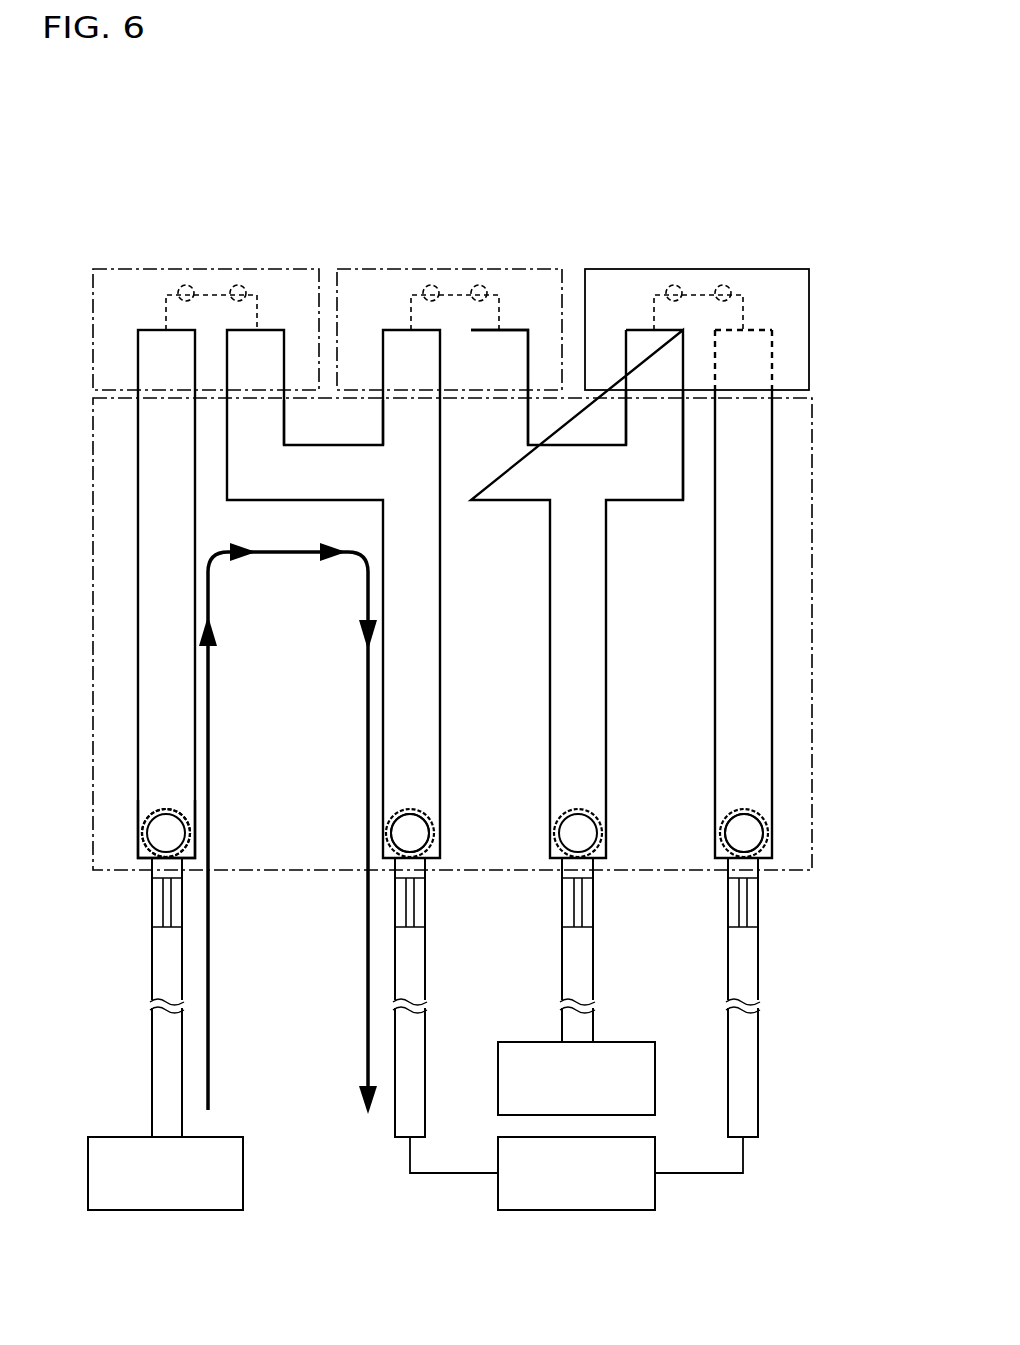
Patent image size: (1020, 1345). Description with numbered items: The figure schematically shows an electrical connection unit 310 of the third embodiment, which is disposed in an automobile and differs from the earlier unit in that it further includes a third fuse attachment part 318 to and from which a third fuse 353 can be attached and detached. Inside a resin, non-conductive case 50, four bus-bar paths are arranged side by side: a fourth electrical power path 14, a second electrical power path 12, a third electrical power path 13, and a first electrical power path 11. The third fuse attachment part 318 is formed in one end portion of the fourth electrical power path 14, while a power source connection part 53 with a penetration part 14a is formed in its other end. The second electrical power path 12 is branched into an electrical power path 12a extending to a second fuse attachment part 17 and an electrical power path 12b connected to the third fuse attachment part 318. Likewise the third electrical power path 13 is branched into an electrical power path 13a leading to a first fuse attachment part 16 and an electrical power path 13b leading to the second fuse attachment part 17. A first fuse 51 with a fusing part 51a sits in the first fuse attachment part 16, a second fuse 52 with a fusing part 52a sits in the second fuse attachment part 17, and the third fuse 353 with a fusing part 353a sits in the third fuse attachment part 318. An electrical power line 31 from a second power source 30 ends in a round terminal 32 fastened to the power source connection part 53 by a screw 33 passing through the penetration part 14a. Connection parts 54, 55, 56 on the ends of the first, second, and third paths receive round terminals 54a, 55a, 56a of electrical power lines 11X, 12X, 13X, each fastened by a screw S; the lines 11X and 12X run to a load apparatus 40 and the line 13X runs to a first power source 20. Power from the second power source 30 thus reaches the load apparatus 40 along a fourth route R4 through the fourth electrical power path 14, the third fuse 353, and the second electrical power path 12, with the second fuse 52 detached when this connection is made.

The electrical connection unit 310 is at (554, 176).
The case 50 is at (93, 408).
The third fuse 353 is at (141, 280).
The fusing part 353a is at (209, 293).
The second fuse 52 is at (418, 280).
The fusing part 52a is at (452, 293).
The first fuse 51 is at (660, 280).
The fusing part 51a is at (695, 293).
The fourth electrical power path 14 is at (152, 643).
The penetration part 14a is at (142, 826).
The second electrical power path 12 is at (420, 628).
The electrical power path 12a is at (396, 415).
The electrical power path 12b is at (270, 432).
The third electrical power path 13 is at (560, 672).
The electrical power path 13a is at (634, 490).
The electrical power path 13b is at (511, 490).
The first electrical power path 11 is at (730, 672).
The third fuse attachment part 318 is at (177, 368).
The second fuse attachment part 17 is at (417, 368).
The first fuse attachment part 16 is at (660, 368).
The fourth route R4 is at (282, 556).
The screw 33 is at (166, 810).
The round terminal 32 is at (137, 836).
The power source connection part 53 is at (147, 852).
The connection part 55 is at (432, 852).
The round terminal 55a is at (414, 815).
The connection part 56 is at (553, 868).
The round terminal 56a is at (582, 815).
The connection part 54 is at (716, 868).
The round terminal 54a is at (748, 815).
The screw S is at (420, 835).
The electrical power line 31 is at (160, 958).
The electrical power line 12X is at (412, 980).
The electrical power line 13X is at (570, 953).
The electrical power line 11X is at (738, 967).
The first power source 20 is at (622, 1040).
The second power source 30 is at (158, 1212).
The load apparatus 40 is at (613, 1212).